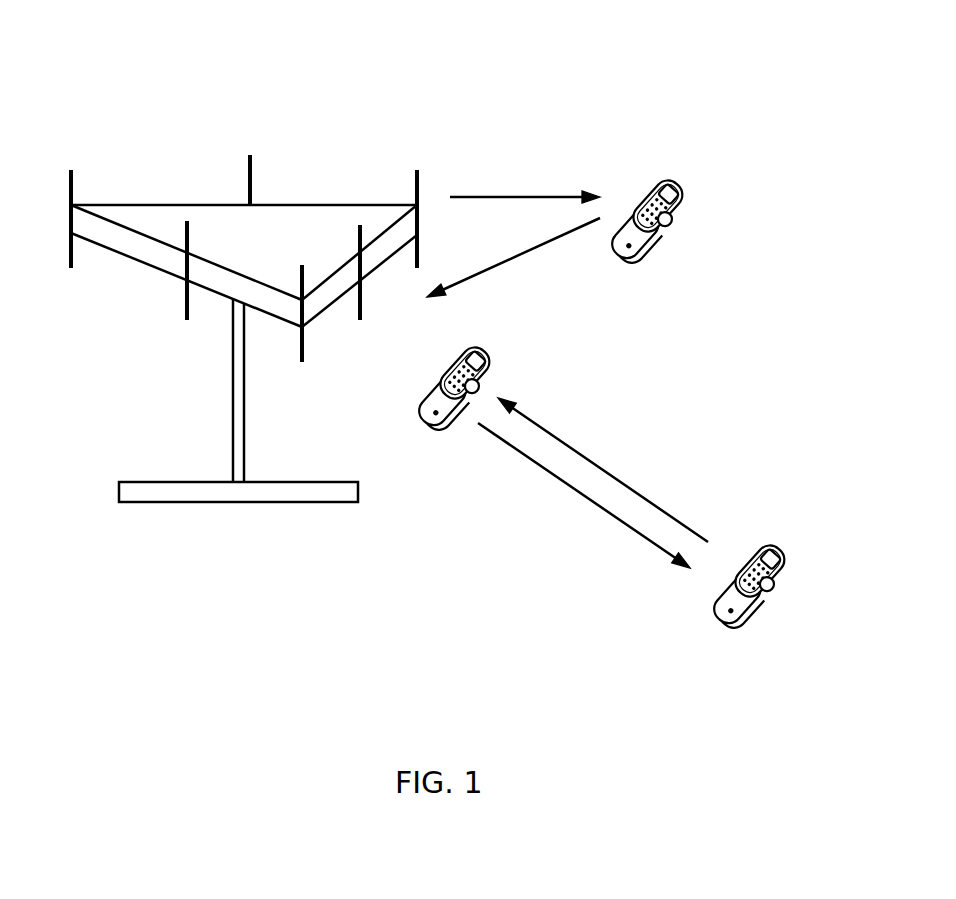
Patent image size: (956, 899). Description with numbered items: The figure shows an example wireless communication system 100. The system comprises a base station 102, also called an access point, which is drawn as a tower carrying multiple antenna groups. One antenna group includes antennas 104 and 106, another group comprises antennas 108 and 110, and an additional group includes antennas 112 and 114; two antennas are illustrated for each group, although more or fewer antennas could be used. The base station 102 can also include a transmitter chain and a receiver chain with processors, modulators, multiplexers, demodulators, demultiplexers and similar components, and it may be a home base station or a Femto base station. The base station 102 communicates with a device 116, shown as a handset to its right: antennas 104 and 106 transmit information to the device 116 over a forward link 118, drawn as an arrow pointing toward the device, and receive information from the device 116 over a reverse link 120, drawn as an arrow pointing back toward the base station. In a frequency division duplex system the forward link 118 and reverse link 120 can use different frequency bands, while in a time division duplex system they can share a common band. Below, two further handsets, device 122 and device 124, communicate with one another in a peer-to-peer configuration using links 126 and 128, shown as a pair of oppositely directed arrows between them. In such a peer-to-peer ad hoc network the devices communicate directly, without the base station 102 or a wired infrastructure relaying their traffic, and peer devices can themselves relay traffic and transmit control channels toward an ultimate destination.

The wireless communication system 100 is at (801, 42).
The base station 102 is at (285, 502).
The antenna 104 is at (417, 171).
The antenna 106 is at (360, 320).
The antenna 108 is at (302, 362).
The antenna 110 is at (187, 320).
The antenna 112 is at (71, 170).
The antenna 114 is at (250, 156).
The device 116 is at (665, 178).
The forward link 118 is at (507, 197).
The reverse link 120 is at (503, 263).
The device 122 is at (478, 348).
The device 124 is at (772, 543).
The link 126 is at (587, 502).
The link 128 is at (593, 460).